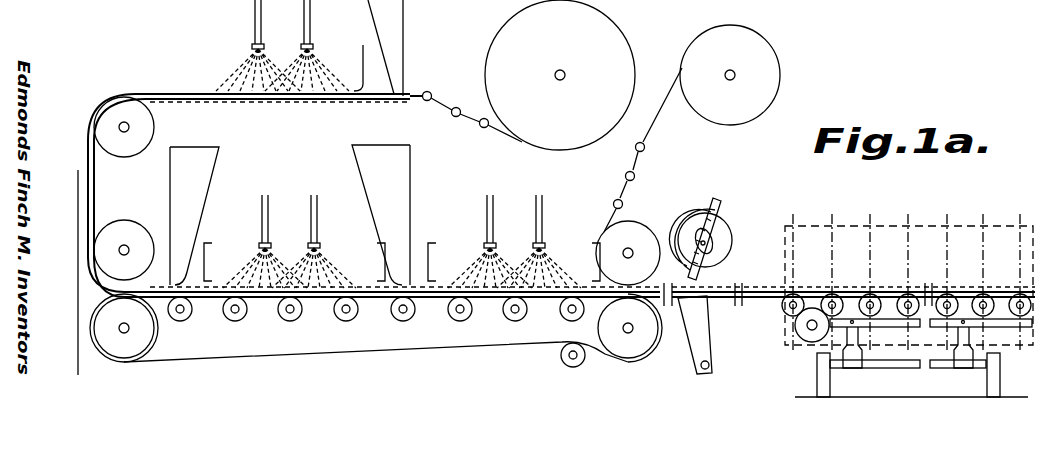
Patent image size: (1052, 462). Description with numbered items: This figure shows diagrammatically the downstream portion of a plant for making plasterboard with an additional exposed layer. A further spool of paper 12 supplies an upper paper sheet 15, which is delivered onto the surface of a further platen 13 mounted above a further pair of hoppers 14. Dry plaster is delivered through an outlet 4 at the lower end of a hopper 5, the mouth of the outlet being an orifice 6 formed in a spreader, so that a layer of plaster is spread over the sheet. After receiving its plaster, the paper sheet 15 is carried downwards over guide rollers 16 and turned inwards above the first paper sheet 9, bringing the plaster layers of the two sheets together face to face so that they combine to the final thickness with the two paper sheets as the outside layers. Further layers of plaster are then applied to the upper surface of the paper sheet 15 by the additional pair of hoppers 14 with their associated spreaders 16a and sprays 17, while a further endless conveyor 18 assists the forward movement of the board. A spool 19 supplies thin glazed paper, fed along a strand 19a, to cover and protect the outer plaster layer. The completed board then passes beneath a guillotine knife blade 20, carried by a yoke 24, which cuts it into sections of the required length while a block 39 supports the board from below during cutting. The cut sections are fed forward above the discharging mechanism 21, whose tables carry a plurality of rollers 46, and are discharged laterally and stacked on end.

The outlet 4 is at (400, 103).
The hopper 5 is at (414, 48).
The orifice 6 is at (384, 92).
The paper sheet 9 is at (75, 297).
The spool of paper 12 is at (587, 130).
The platen 13 is at (300, 103).
The hoppers 14 is at (207, 188).
The paper sheet 15 is at (452, 117).
The guide rollers 16 is at (105, 131).
The spreaders 16a is at (181, 284).
The sprays 17 is at (322, 210).
The endless conveyor 18 is at (455, 347).
The spool 19 is at (736, 113).
The web strand 19a is at (658, 128).
The guillotine knife blade 20 is at (705, 290).
The discharging mechanism 21 is at (913, 243).
The yoke 24 is at (733, 238).
The block 39 is at (703, 300).
The rollers 46 is at (862, 292).